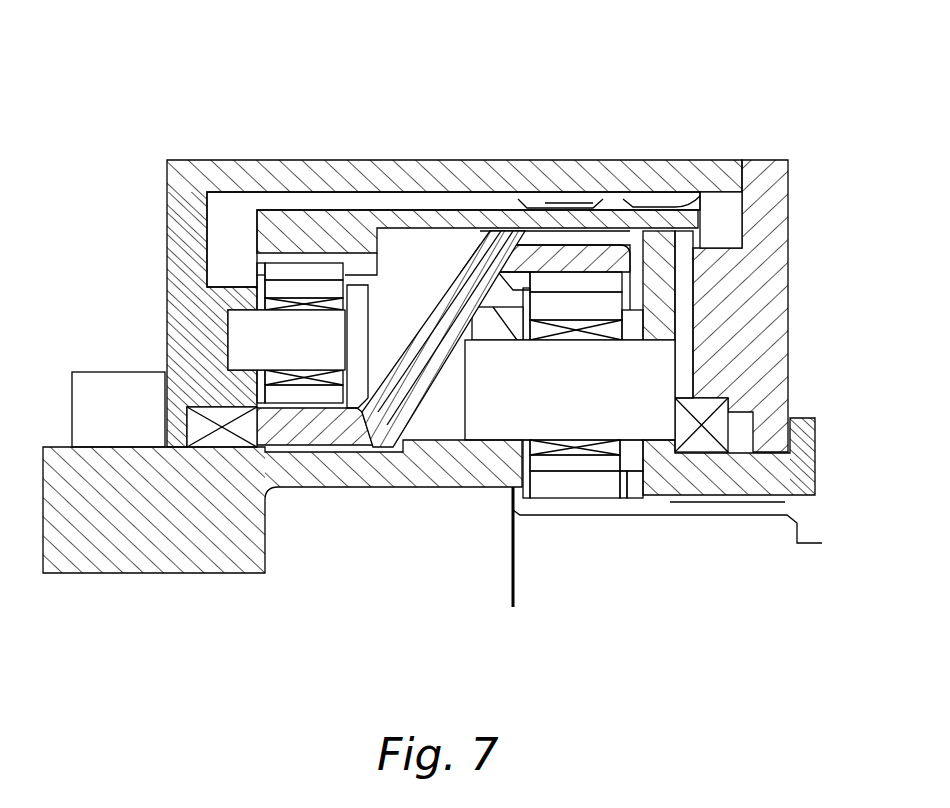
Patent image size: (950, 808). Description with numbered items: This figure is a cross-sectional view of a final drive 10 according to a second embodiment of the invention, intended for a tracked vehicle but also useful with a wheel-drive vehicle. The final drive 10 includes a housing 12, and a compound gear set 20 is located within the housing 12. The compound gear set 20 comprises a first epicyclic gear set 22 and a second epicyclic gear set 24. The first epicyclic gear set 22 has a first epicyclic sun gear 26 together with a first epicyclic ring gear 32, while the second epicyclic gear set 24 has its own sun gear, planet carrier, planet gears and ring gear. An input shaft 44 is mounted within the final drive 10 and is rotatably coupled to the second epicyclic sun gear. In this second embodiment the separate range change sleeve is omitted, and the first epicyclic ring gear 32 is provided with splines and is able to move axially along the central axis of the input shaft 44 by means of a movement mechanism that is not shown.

The final drive 10 is at (443, 364).
The housing 12 is at (775, 183).
The compound gear set 20 is at (422, 514).
The first epicyclic gear set 22 is at (304, 198).
The second epicyclic gear set 24 is at (573, 198).
The first epicyclic sun gear 26 is at (280, 232).
The first epicyclic ring gear 32 is at (355, 218).
The input shaft 44 is at (722, 537).